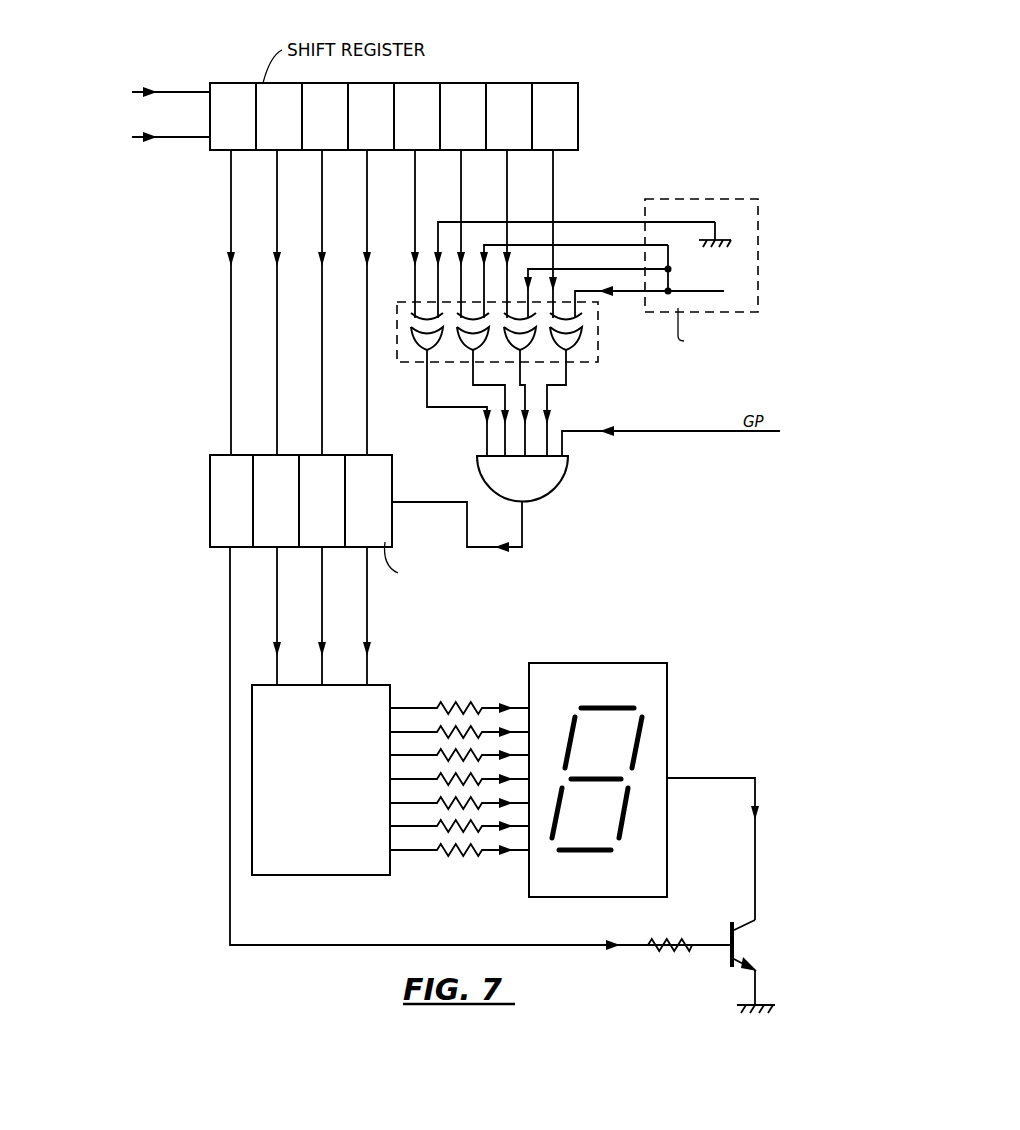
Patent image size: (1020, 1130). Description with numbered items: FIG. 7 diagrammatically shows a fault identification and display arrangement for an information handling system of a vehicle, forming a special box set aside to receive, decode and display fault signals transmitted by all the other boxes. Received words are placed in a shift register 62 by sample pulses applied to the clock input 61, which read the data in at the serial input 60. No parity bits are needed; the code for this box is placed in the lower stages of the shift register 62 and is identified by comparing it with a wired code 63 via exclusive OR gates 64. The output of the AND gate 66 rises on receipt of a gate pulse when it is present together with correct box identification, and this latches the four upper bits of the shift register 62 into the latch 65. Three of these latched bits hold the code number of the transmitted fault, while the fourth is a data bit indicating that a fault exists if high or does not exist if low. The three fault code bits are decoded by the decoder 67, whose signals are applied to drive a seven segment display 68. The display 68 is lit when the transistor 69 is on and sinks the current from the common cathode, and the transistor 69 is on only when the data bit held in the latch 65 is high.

The serial input 60 is at (170, 149).
The clock input 61 is at (164, 91).
The shift register 62 is at (570, 102).
The wired code 63 is at (708, 207).
The exclusive OR gates 64 is at (598, 352).
The latch 65 is at (212, 441).
The AND gate 66 is at (550, 473).
The decoder 67 is at (385, 698).
The seven segment display 68 is at (655, 673).
The transistor 69 is at (753, 966).